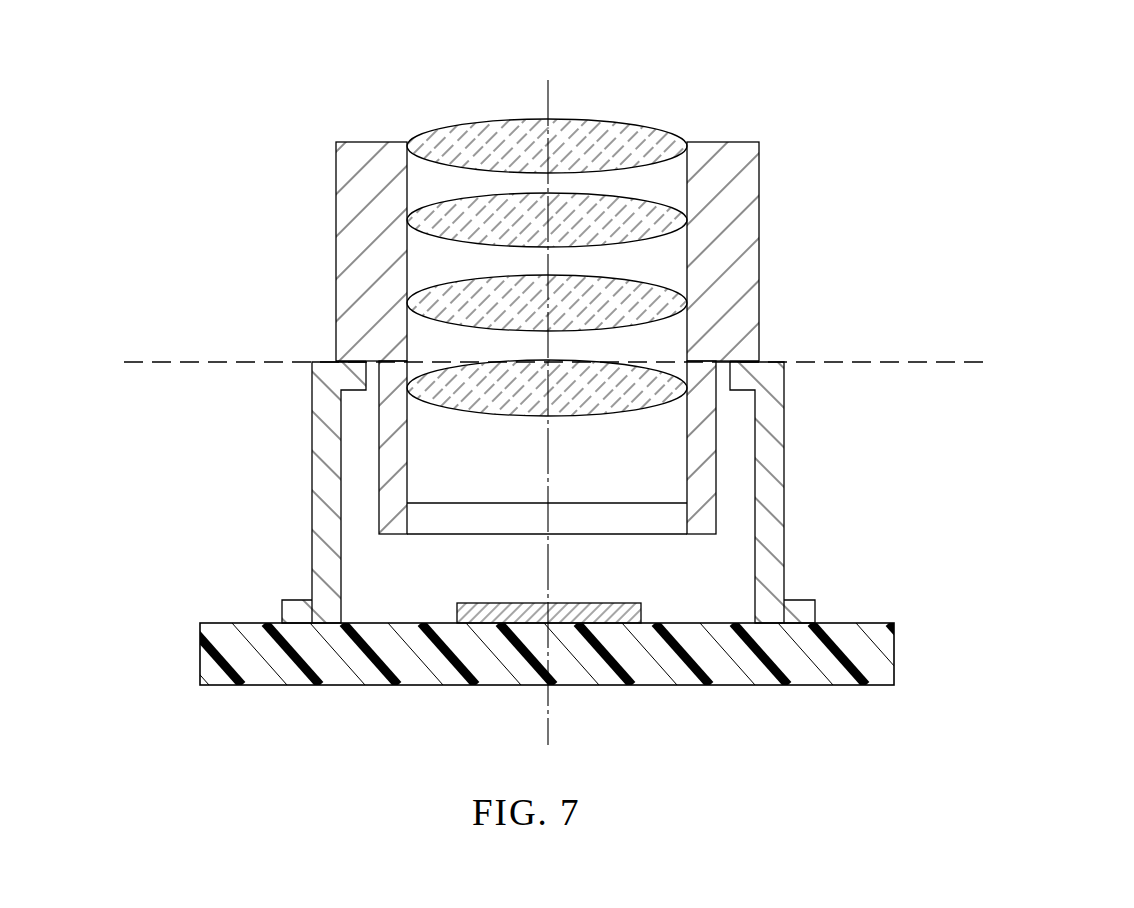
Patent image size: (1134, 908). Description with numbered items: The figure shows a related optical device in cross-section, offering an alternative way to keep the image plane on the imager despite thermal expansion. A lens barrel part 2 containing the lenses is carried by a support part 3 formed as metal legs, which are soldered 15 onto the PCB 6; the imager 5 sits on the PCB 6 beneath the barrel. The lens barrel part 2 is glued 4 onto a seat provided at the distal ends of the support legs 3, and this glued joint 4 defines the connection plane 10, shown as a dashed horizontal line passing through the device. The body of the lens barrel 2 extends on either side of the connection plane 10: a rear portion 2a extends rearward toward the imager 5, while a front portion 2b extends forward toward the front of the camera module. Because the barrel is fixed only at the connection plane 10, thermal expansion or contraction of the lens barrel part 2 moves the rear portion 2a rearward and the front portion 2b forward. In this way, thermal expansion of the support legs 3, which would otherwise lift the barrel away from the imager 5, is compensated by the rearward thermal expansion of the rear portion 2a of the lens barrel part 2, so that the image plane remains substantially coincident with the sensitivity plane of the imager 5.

The lens barrel part 2 is at (591, 309).
The rear portion 2a is at (707, 485).
The front portion 2b is at (755, 177).
The support part 3 is at (775, 417).
The glued joint 4 is at (757, 360).
The imager 5 is at (608, 623).
The PCB 6 is at (232, 680).
The connection plane 10 is at (185, 362).
The solder 15 is at (283, 602).